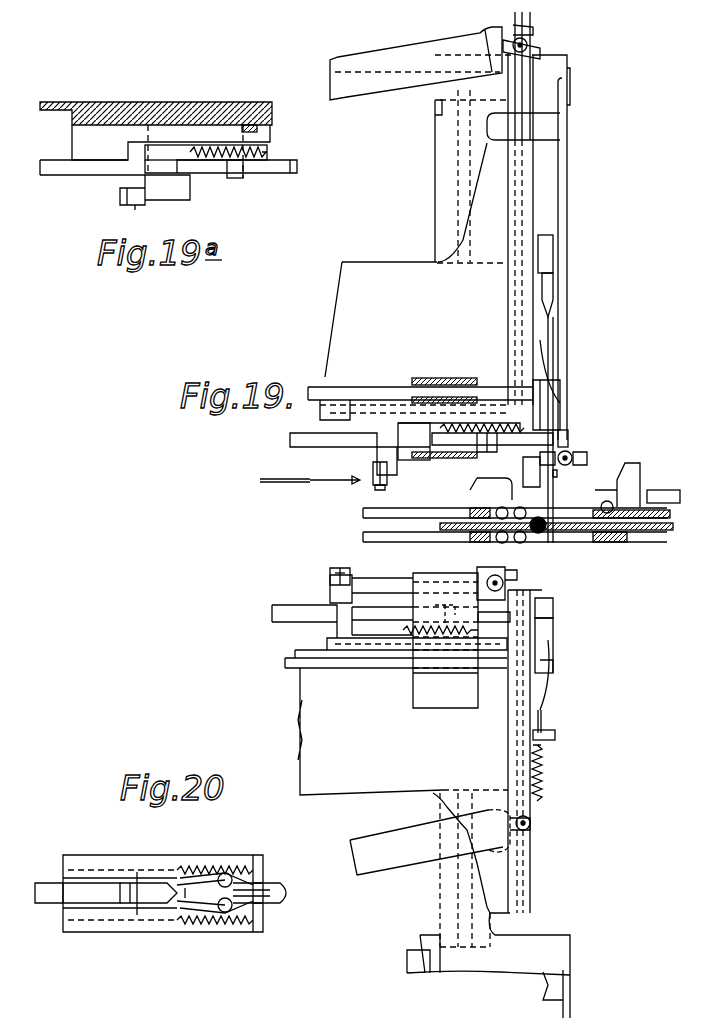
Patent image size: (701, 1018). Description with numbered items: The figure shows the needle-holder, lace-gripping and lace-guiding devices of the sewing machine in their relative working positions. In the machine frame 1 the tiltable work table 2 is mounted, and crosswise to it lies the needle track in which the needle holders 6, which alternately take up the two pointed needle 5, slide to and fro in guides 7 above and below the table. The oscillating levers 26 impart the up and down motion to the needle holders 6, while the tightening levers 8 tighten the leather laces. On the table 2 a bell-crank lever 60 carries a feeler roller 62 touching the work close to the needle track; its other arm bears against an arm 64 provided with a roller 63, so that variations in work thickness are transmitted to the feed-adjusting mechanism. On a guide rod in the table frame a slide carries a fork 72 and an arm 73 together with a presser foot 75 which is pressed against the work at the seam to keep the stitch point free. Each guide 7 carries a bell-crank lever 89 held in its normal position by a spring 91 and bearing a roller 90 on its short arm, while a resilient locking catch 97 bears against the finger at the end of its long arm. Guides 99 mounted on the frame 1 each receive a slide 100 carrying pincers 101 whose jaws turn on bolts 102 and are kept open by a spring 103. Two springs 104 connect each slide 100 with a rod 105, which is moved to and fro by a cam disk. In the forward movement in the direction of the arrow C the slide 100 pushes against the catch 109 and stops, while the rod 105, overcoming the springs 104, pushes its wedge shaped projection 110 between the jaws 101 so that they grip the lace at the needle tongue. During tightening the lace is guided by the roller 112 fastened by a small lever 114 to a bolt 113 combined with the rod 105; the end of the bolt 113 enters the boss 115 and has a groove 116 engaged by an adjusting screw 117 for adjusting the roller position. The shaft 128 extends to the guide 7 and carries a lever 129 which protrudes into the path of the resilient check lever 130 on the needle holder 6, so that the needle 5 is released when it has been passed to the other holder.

In FIG. 19, the machine frame 1 is at (403, 528).
In FIG. 19, the work table 2 is at (365, 535).
In FIG. 19, the two pointed needle 5 is at (553, 335).
In FIG. 19, the needle holder 6 is at (555, 283).
In FIG. 19, the needle holder guide 7 is at (483, 195).
In FIG. 19, the tightening lever 8 is at (567, 190).
In FIG. 19, the oscillating lever 26 is at (378, 105).
In FIG. 19, the bell-crank lever 60 is at (602, 543).
In FIG. 19, the feeler roller 62 is at (575, 530).
In FIG. 19, the roller 63 is at (628, 465).
In FIG. 19, the arm 64 is at (650, 490).
In FIG. 19, the fork 72 is at (478, 490).
In FIG. 19, the arm 73 is at (523, 475).
In FIG. 19, the presser foot 75 is at (548, 533).
In FIG. 19, the bell-crank lever 89 is at (541, 718).
In FIG. 19, the roller 90 is at (548, 740).
In FIG. 19, the spring 91 is at (545, 778).
In FIG. 19, the resilient locking catch 97 is at (560, 395).
In FIG. 19A, the guide 99 is at (112, 108).
In FIG. 19, the guide 99 is at (320, 408).
In FIG. 20, the guide 99 is at (82, 932).
In FIG. 19A, the slide 100 is at (163, 150).
In FIG. 19, the slide 100 is at (398, 428).
In FIG. 20, the slide 100 is at (150, 905).
In FIG. 19A, the pincers 101 is at (270, 173).
In FIG. 19, the pincers 101 is at (495, 680).
In FIG. 20, the pincers 101 is at (225, 913).
In FIG. 19A, the bolt 102 is at (233, 178).
In FIG. 20, the bolt 102 is at (255, 920).
In FIG. 20, the spring 103 is at (178, 905).
In FIG. 19A, the spring 104 is at (220, 145).
In FIG. 19, the spring 104 is at (470, 425).
In FIG. 20, the spring 104 is at (205, 865).
In FIG. 19A, the rod 105 is at (77, 172).
In FIG. 19, the rod 105 is at (305, 447).
In FIG. 20, the rod 105 is at (50, 903).
In FIG. 19A, the catch 109 is at (257, 128).
In FIG. 19A, the wedge shaped projection 110 is at (167, 187).
In FIG. 19, the wedge shaped projection 110 is at (415, 440).
In FIG. 20, the wedge shaped projection 110 is at (138, 877).
In FIG. 19, the guide roller 112 is at (573, 460).
In FIG. 19, the bolt 113 is at (556, 477).
In FIG. 19, the small lever 114 is at (568, 438).
In FIG. 19, the boss 115 is at (377, 460).
In FIG. 19, the groove 116 is at (395, 485).
In FIG. 19, the adjusting screw 117 is at (378, 490).
In FIG. 19, the shaft 128 is at (368, 395).
In FIG. 19, the lever 129 is at (560, 418).
In FIG. 19, the resilient check lever 130 is at (553, 252).
In FIG. 19, the arrow C is at (296, 481).